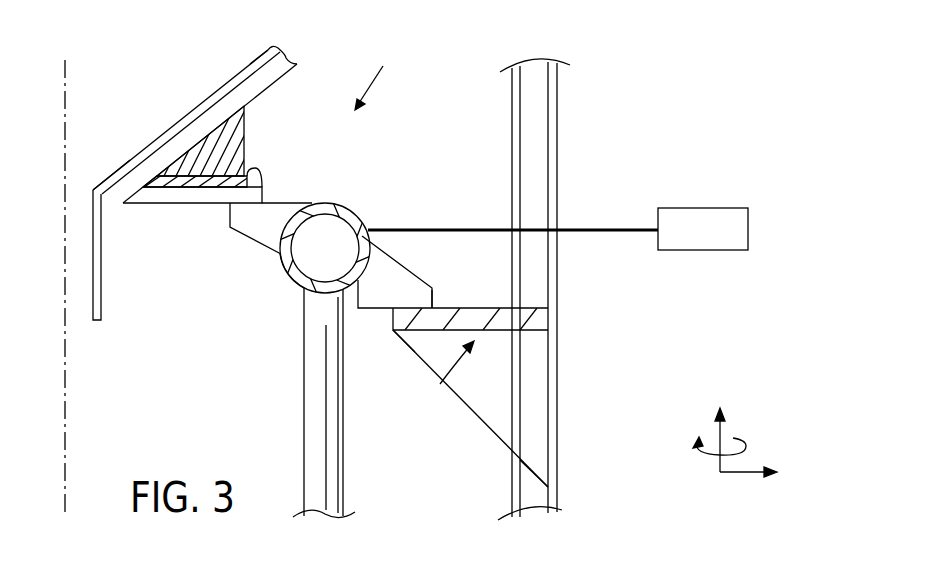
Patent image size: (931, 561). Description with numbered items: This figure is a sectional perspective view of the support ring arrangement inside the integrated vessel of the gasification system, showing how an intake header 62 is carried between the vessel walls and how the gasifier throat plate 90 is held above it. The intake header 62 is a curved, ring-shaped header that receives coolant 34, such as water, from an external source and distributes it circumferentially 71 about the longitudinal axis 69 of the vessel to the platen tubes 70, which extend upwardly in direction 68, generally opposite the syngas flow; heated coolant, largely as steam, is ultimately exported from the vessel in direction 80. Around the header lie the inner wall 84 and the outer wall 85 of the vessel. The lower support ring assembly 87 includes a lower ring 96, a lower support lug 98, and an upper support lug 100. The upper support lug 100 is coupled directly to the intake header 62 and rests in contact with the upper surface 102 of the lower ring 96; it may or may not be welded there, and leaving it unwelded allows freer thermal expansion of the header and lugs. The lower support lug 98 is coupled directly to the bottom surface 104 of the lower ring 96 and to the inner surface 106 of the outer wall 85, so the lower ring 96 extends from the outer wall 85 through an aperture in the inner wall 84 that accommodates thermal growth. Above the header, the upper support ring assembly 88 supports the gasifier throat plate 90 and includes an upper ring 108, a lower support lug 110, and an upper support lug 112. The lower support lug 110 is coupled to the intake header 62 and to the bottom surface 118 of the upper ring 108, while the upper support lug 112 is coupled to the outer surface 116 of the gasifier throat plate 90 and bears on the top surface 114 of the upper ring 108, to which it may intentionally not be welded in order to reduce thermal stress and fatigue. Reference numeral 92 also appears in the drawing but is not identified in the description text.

The coolant 34 is at (705, 208).
The intake header 62 is at (288, 276).
The direction 68 is at (720, 426).
The longitudinal axis 69 is at (68, 394).
The platen tubes 70 is at (316, 423).
The circumferential direction 71 is at (705, 458).
The direction 80 is at (763, 474).
The inner wall 84 is at (512, 155).
The outer wall 85 is at (557, 127).
The lower support ring assembly 87 is at (443, 382).
The upper support ring assembly 88 is at (372, 74).
The gasifier throat plate 90 is at (209, 124).
The panel surface 92 is at (167, 132).
The lower ring 96 is at (478, 316).
The lower support lug 98 is at (477, 390).
The upper support lug 100 is at (389, 275).
The upper surface 102 is at (452, 300).
The bottom surface 104 is at (450, 331).
The inner surface 106 is at (546, 500).
The upper ring 108 is at (213, 204).
The lower support lug 110 is at (278, 208).
The upper support lug 112 is at (236, 148).
The top surface 114 is at (246, 172).
The outer surface 116 is at (263, 93).
The bottom surface 118 is at (173, 205).